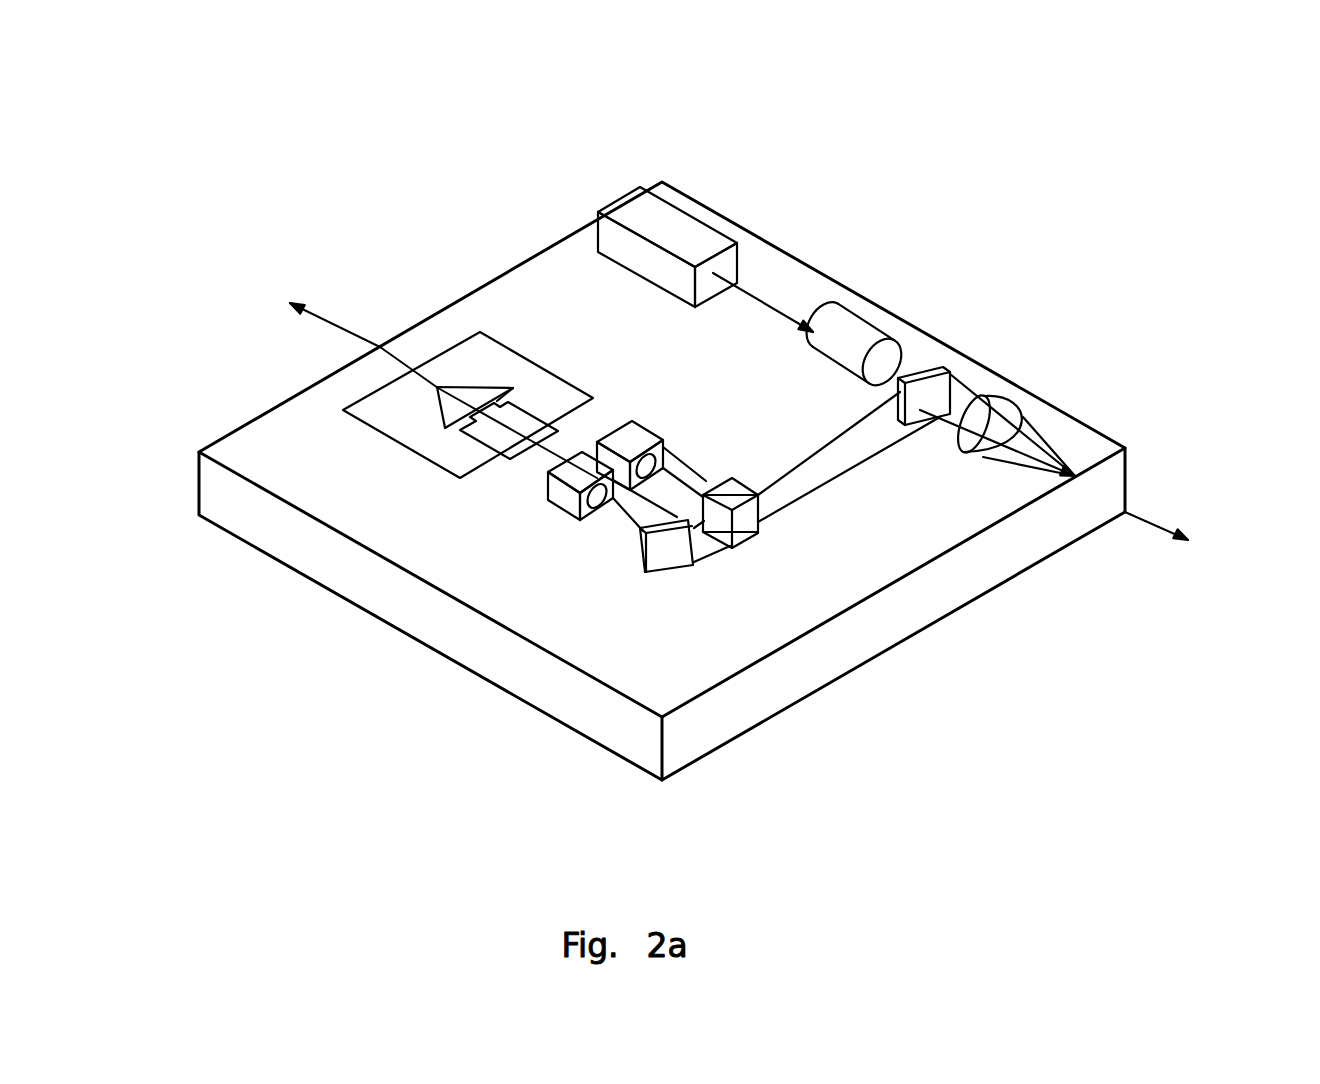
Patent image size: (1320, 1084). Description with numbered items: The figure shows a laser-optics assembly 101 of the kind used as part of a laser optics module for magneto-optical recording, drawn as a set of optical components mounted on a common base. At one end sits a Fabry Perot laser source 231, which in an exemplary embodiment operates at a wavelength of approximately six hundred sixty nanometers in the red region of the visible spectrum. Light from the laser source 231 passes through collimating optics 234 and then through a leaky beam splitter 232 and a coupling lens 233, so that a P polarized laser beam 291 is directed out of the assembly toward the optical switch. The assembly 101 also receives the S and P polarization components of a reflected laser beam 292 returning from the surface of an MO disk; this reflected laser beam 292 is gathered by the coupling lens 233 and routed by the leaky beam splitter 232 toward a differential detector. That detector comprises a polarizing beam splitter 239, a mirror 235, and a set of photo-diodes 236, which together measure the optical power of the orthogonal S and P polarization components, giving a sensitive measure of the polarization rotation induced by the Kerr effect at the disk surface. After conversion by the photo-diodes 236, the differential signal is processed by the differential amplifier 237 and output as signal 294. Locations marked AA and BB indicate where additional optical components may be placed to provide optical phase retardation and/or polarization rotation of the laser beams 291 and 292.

The laser-optics assembly 101 is at (321, 126).
The Fabry Perot laser source 231 is at (707, 222).
The leaky beam splitter 232 is at (940, 370).
The coupling lens 233 is at (1022, 425).
The collimating optics 234 is at (865, 315).
The mirror 235 is at (665, 570).
The set of photo-diodes 236 is at (597, 442).
The differential amplifier 237 is at (472, 367).
The polarizing beam splitter 239 is at (737, 548).
The P polarized laser beam 291 is at (1177, 527).
The reflected laser beam 292 is at (1079, 457).
The output signal 294 is at (417, 376).
The location AA is at (972, 388).
The location BB is at (845, 457).